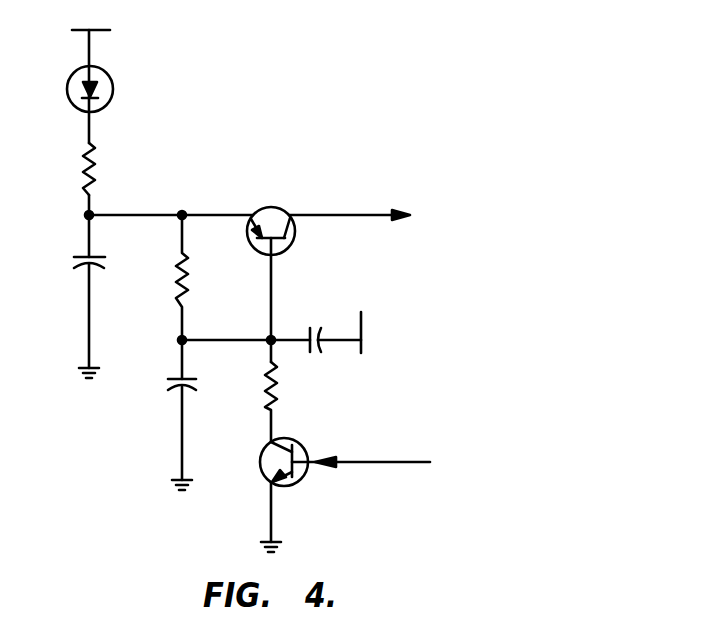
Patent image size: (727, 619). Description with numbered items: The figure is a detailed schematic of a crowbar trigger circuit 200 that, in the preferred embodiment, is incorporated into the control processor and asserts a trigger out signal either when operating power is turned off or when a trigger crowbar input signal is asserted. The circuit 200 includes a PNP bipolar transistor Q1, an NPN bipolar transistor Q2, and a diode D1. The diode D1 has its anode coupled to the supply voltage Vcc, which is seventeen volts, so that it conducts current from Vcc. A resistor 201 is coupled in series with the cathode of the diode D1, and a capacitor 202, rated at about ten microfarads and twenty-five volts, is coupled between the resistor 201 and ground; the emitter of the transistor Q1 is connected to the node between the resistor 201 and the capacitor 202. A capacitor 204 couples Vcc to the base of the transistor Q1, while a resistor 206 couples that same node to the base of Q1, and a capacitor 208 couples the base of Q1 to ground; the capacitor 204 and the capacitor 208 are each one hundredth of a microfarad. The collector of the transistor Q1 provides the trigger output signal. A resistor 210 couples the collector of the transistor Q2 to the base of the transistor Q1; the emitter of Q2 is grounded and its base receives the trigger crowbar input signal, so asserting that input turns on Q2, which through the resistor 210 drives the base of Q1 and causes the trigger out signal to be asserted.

The crowbar trigger circuit 200 is at (375, 50).
The diode D1 is at (107, 72).
The resistor 201 is at (93, 158).
The capacitor 202 is at (107, 265).
The capacitor 204 is at (318, 306).
The resistor 206 is at (192, 262).
The capacitor 208 is at (195, 386).
The resistor 210 is at (288, 392).
The PNP bipolar transistor Q1 is at (271, 205).
The NPN bipolar transistor Q2 is at (298, 444).